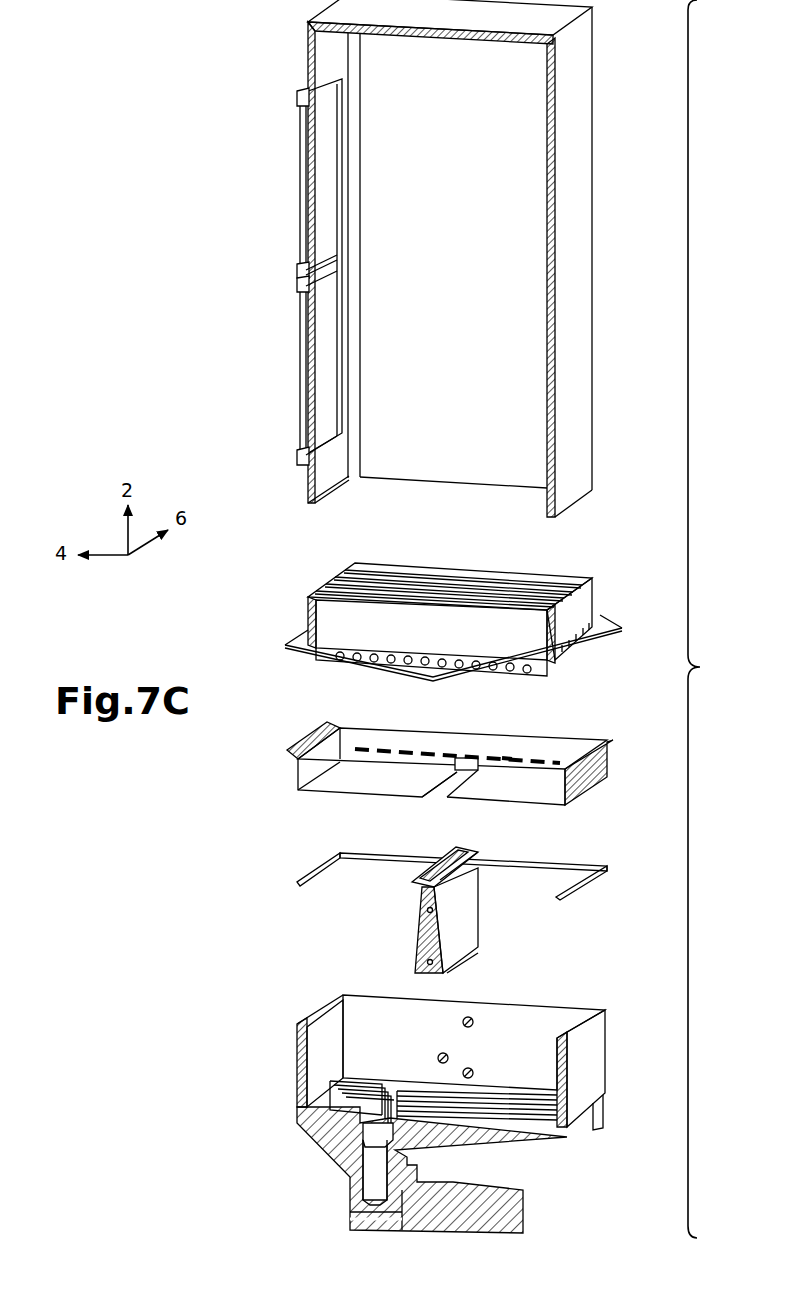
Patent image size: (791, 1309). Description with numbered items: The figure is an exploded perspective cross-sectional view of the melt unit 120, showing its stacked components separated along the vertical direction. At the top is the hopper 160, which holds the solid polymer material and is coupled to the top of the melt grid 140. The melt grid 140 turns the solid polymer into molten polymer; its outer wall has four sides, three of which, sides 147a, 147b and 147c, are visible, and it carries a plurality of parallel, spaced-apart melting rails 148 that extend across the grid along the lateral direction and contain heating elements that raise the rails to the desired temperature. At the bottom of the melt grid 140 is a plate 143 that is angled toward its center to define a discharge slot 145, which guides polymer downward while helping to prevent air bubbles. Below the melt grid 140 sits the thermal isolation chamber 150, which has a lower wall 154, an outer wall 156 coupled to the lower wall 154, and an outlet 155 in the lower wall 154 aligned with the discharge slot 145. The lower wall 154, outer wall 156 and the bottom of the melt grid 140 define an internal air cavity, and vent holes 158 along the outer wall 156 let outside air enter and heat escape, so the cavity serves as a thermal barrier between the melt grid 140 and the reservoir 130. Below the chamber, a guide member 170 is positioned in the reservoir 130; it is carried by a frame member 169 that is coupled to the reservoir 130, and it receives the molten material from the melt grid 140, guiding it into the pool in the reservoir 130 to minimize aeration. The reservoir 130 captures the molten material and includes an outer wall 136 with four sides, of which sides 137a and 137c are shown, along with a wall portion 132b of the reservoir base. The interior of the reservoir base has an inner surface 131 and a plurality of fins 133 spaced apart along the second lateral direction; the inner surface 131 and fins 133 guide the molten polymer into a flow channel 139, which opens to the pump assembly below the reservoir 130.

The melt unit 120 is at (725, 619).
The hopper 160 is at (230, 228).
The melt grid 140 is at (422, 606).
The plate 143 is at (583, 659).
The discharge slot 145 is at (430, 679).
The side of outer wall of melt grid 147a is at (308, 612).
The side of outer wall of melt grid 147b is at (427, 567).
The side of outer wall of melt grid 147c is at (585, 607).
The melting rails 148 is at (530, 600).
The thermal isolation chamber 150 is at (399, 770).
The lower wall 154 is at (536, 796).
The outlet 155 is at (434, 800).
The outer wall 156 is at (440, 741).
The vent holes 158 is at (500, 758).
The support bar 169 is at (317, 868).
The guide member 170 is at (413, 927).
The reservoir 130 is at (427, 1099).
The inner surface 131 is at (363, 1142).
The back wall 132b is at (393, 1020).
The fins 133 is at (483, 1088).
The outer wall 136 is at (297, 1045).
The side of outer wall of reservoir 137a is at (323, 1037).
The side of outer wall of reservoir 137c is at (587, 1058).
The flow channel 139 is at (370, 1183).